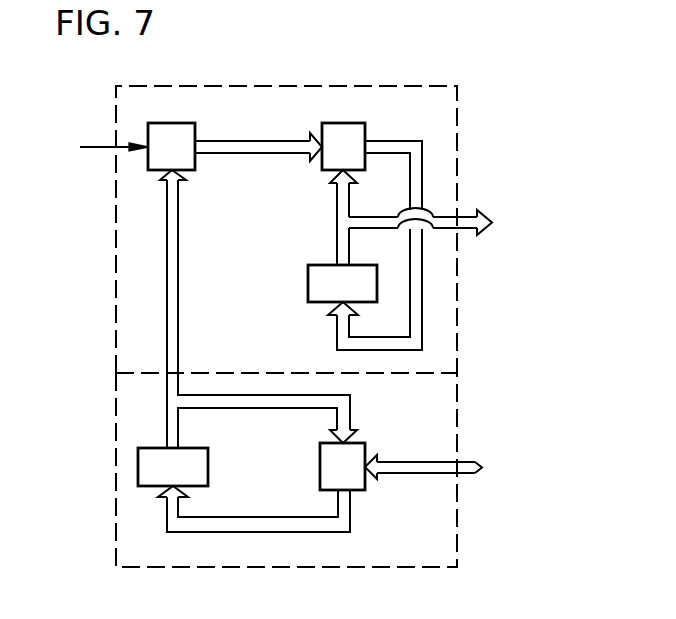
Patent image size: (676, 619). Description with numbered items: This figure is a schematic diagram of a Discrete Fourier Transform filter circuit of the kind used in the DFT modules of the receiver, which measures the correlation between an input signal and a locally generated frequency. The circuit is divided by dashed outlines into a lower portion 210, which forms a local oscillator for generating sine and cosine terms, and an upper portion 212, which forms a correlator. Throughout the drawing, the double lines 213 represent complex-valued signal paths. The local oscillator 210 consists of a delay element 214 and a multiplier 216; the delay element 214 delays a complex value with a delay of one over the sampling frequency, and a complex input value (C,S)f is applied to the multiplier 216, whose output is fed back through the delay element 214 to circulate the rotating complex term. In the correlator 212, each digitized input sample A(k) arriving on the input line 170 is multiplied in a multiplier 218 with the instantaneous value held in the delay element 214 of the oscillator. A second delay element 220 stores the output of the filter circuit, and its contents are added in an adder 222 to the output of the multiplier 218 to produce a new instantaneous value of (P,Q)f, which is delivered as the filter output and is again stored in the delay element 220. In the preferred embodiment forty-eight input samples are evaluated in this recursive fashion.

The input line 170 is at (93, 147).
The lower portion 210 is at (458, 399).
The upper portion 212 is at (458, 290).
The double lines 213 is at (240, 154).
The delay element 214 is at (210, 465).
The multiplier 216 is at (323, 458).
The multiplier 218 is at (186, 132).
The delay element 220 is at (306, 284).
The adder 222 is at (350, 129).